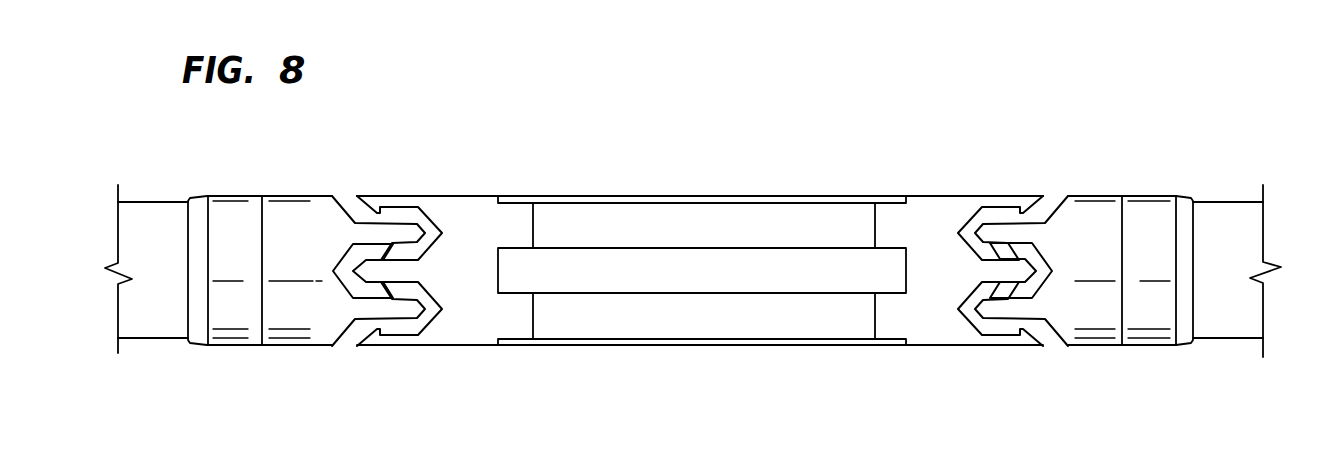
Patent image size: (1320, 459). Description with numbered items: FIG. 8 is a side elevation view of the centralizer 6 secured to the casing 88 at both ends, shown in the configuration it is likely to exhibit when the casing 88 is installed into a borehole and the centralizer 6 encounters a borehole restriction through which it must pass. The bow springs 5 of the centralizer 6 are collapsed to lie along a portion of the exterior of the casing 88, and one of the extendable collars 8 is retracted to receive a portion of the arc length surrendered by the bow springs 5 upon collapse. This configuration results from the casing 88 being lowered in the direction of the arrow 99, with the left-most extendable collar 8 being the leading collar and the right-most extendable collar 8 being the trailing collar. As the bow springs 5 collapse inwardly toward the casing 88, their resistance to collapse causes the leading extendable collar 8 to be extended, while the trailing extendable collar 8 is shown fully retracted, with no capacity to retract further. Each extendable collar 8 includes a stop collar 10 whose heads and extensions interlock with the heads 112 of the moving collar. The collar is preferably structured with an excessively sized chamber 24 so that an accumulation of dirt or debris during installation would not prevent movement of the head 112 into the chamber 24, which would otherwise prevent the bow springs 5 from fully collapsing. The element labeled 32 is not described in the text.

The casing 88 is at (157, 201).
The end collar 32 is at (237, 222).
The stop collar 10 is at (290, 195).
The extendable collar 8 is at (376, 170).
The head 112 is at (410, 222).
The bow springs 5 is at (736, 339).
The centralizer 6 is at (901, 157).
The chamber 24 is at (1008, 214).
The arrow 99 is at (655, 378).